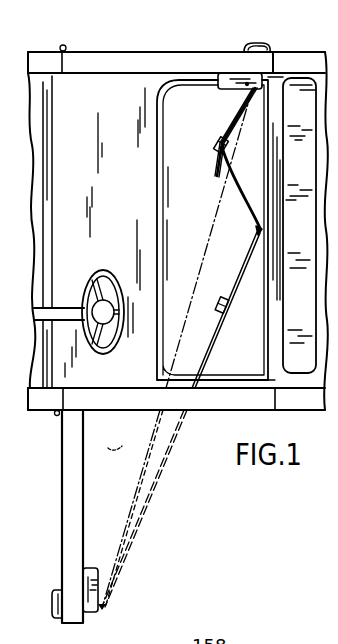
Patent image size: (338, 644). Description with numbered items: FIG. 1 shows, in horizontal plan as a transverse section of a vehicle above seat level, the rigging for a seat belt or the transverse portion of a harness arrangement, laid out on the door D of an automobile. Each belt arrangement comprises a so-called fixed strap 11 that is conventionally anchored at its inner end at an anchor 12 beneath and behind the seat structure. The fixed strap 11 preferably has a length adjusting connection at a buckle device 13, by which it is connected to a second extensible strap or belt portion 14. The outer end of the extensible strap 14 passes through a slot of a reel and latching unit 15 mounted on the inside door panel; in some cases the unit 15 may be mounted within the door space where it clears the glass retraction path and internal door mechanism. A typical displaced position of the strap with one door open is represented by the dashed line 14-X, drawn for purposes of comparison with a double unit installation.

The vehicle door D is at (188, 53).
The fixed strap 11 is at (241, 110).
The anchor 12 is at (257, 228).
The buckle device 13 is at (215, 143).
The extensible strap 14 is at (226, 205).
The displaced strap position 14-X is at (152, 432).
The reel and latching unit 15 is at (251, 71).